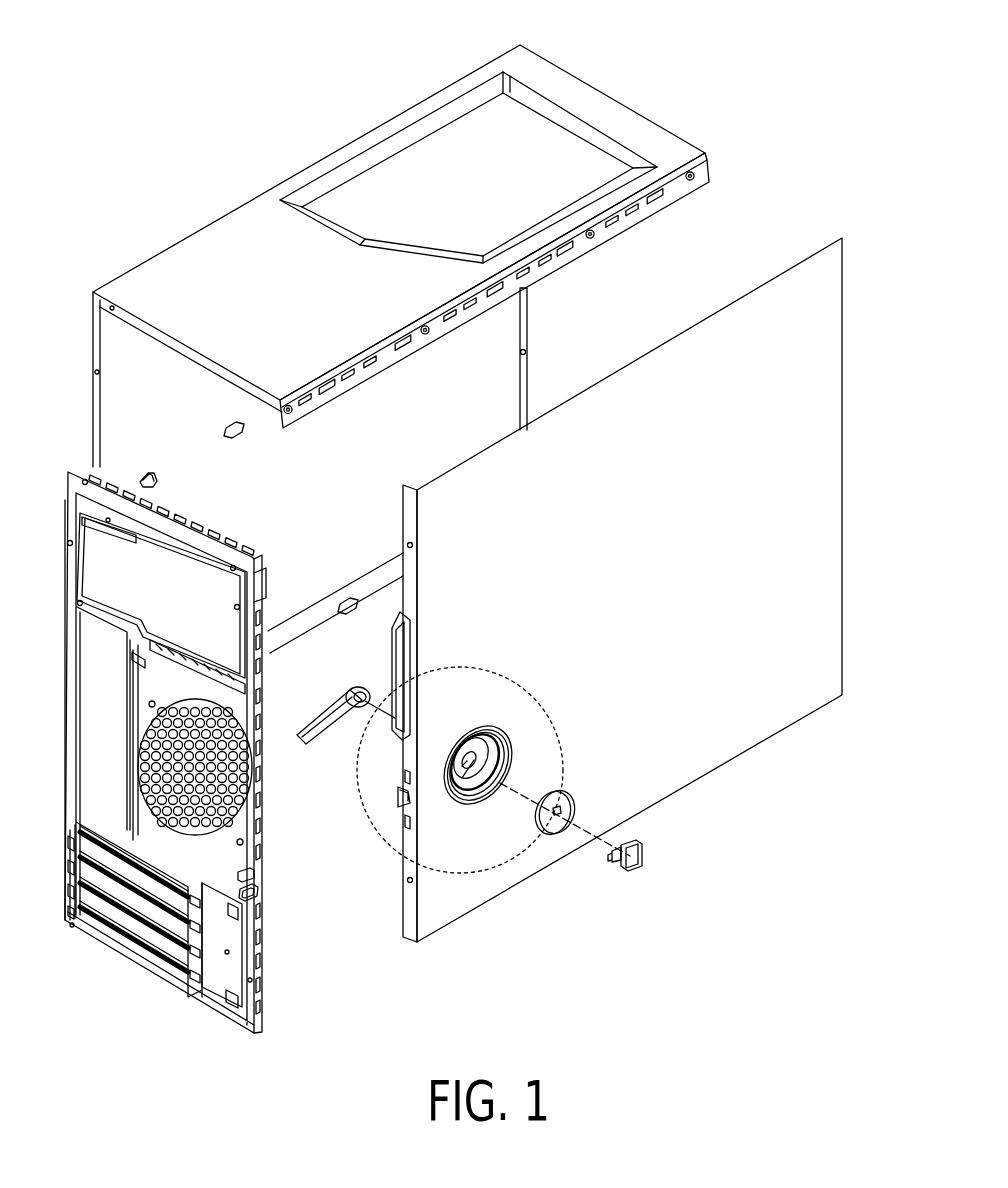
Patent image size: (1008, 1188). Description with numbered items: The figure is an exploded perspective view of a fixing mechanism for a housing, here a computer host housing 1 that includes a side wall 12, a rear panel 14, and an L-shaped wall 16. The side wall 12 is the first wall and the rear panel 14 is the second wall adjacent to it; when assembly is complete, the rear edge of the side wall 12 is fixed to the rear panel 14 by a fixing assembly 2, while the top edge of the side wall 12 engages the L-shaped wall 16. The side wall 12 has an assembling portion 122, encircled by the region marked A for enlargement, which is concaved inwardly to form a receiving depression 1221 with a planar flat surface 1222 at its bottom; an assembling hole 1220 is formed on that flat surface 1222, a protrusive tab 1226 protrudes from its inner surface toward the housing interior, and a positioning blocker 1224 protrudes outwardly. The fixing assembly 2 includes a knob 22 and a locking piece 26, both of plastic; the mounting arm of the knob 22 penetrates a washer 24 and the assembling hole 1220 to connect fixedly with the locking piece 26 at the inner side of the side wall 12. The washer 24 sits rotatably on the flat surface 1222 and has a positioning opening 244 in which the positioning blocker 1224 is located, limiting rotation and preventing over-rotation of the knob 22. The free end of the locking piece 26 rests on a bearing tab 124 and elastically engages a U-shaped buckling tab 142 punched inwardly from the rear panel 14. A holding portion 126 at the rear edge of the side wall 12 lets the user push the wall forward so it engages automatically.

The housing 1 is at (623, 91).
The L-shaped wall 16 is at (243, 235).
The side wall 12 is at (799, 300).
The rear panel 14 is at (201, 739).
The buckling tab 142 is at (253, 893).
The locking piece 26 is at (326, 684).
The holding portion 126 is at (403, 658).
The bearing tab 124 is at (398, 787).
The assembling portion 122 is at (526, 776).
The assembling hole 1220 is at (463, 788).
The receiving depression 1221 is at (466, 764).
The flat surface 1222 is at (507, 737).
The positioning blocker 1224 is at (497, 793).
The protrusive tab 1226 is at (473, 727).
The fixing assembly 2 is at (689, 861).
The washer 24 is at (625, 847).
The positioning opening 244 is at (556, 822).
The knob 22 is at (637, 877).
The detail region A is at (530, 707).